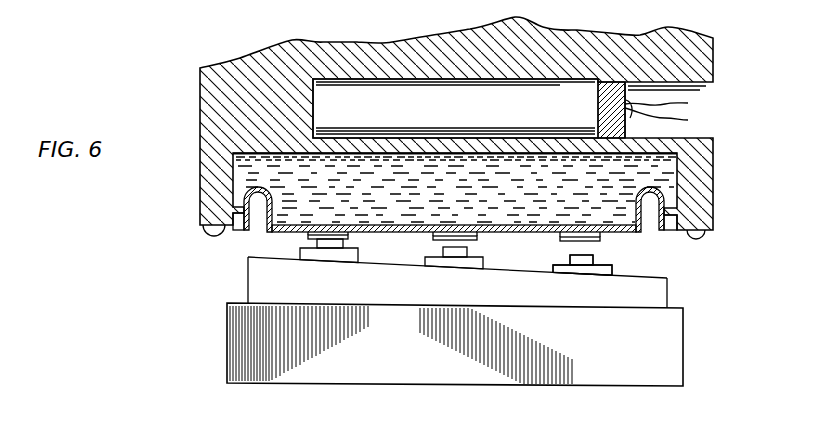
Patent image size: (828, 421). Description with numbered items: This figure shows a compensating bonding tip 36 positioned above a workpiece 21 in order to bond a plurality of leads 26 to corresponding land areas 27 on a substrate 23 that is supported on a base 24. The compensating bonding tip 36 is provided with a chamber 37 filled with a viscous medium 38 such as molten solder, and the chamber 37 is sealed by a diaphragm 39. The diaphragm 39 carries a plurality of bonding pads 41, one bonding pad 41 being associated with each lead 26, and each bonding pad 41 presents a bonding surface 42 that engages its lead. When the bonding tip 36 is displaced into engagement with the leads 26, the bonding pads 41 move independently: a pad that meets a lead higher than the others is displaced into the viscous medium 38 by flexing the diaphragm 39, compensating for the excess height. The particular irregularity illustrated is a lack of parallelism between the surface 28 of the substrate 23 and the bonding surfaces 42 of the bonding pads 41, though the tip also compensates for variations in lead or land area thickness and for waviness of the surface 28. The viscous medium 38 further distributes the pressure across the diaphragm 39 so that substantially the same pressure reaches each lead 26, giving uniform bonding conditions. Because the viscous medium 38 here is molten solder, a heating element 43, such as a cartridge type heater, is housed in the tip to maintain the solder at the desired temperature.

The workpiece 21 is at (448, 320).
The substrate 23 is at (657, 298).
The base 24 is at (670, 354).
The lead 26 is at (580, 259).
The land area 27 is at (567, 275).
The surface 28 is at (660, 277).
The compensating bonding tip 36 is at (197, 81).
The chamber 37 is at (673, 165).
The viscous medium 38 is at (233, 179).
The diaphragm 39 is at (270, 236).
The bonding pad 41 is at (307, 237).
The bonding surface 42 is at (428, 243).
The heating element 43 is at (565, 113).